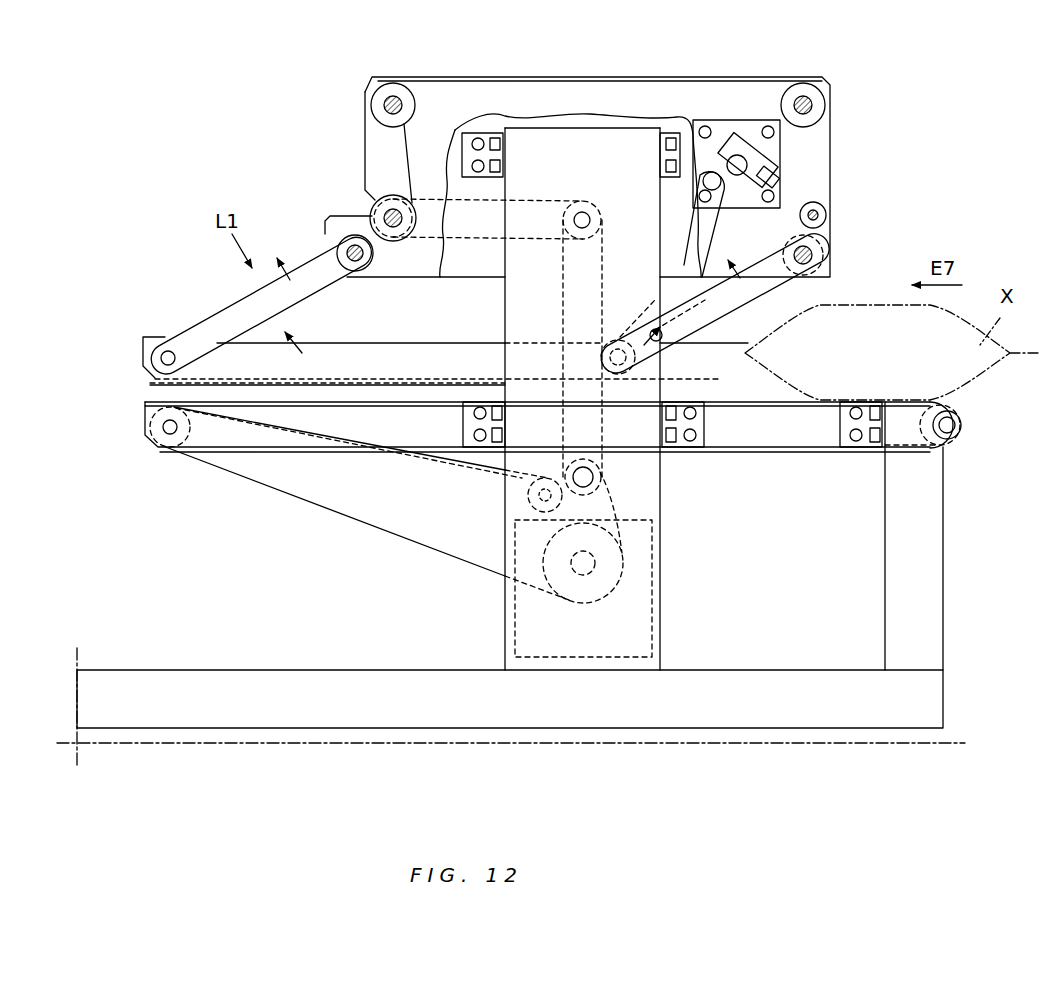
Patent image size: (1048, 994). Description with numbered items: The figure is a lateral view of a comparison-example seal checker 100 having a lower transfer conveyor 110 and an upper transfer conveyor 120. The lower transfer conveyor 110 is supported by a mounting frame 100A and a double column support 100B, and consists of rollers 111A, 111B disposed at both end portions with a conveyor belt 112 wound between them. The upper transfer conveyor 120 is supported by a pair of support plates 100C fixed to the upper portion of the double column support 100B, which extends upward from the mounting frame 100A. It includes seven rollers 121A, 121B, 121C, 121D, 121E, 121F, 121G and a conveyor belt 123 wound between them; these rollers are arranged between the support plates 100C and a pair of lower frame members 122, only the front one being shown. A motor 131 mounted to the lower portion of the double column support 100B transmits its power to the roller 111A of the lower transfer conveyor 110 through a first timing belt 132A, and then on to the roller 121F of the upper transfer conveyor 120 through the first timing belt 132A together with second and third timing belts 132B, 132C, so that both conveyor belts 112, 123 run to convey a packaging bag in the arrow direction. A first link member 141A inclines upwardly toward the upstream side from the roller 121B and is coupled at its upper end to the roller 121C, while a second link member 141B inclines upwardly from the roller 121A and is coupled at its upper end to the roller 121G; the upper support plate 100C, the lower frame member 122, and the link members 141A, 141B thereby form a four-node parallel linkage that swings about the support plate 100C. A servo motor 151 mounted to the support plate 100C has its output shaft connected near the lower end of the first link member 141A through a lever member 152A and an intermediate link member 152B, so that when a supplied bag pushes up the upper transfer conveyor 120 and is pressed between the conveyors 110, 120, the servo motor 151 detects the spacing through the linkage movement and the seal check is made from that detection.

The seal checker 100 is at (962, 160).
The mounting frame 100A is at (933, 610).
The double column support 100B is at (650, 500).
The support plate 100C is at (373, 148).
The lower transfer conveyor 110 is at (222, 492).
The roller 111A is at (163, 452).
The roller 111B is at (960, 447).
The conveyor belt 112 is at (775, 455).
The upper transfer conveyor 120 is at (428, 332).
The roller 121A is at (165, 335).
The roller 121B is at (617, 340).
The roller 121C is at (815, 272).
The roller 121D is at (805, 92).
The roller 121E is at (391, 98).
The roller 121F is at (375, 212).
The roller 121G is at (337, 240).
The frame member 122 is at (457, 353).
The conveyor belt 123 is at (218, 305).
The motor 131 is at (645, 590).
The first timing belt 132A is at (315, 512).
The second timing belt 132B is at (562, 318).
The third timing belt 132C is at (463, 196).
The first link member 141A is at (673, 335).
The second link member 141B is at (303, 290).
The servo motor 151 is at (772, 147).
The lever member 152A is at (748, 145).
The intermediate link member 152B is at (712, 212).